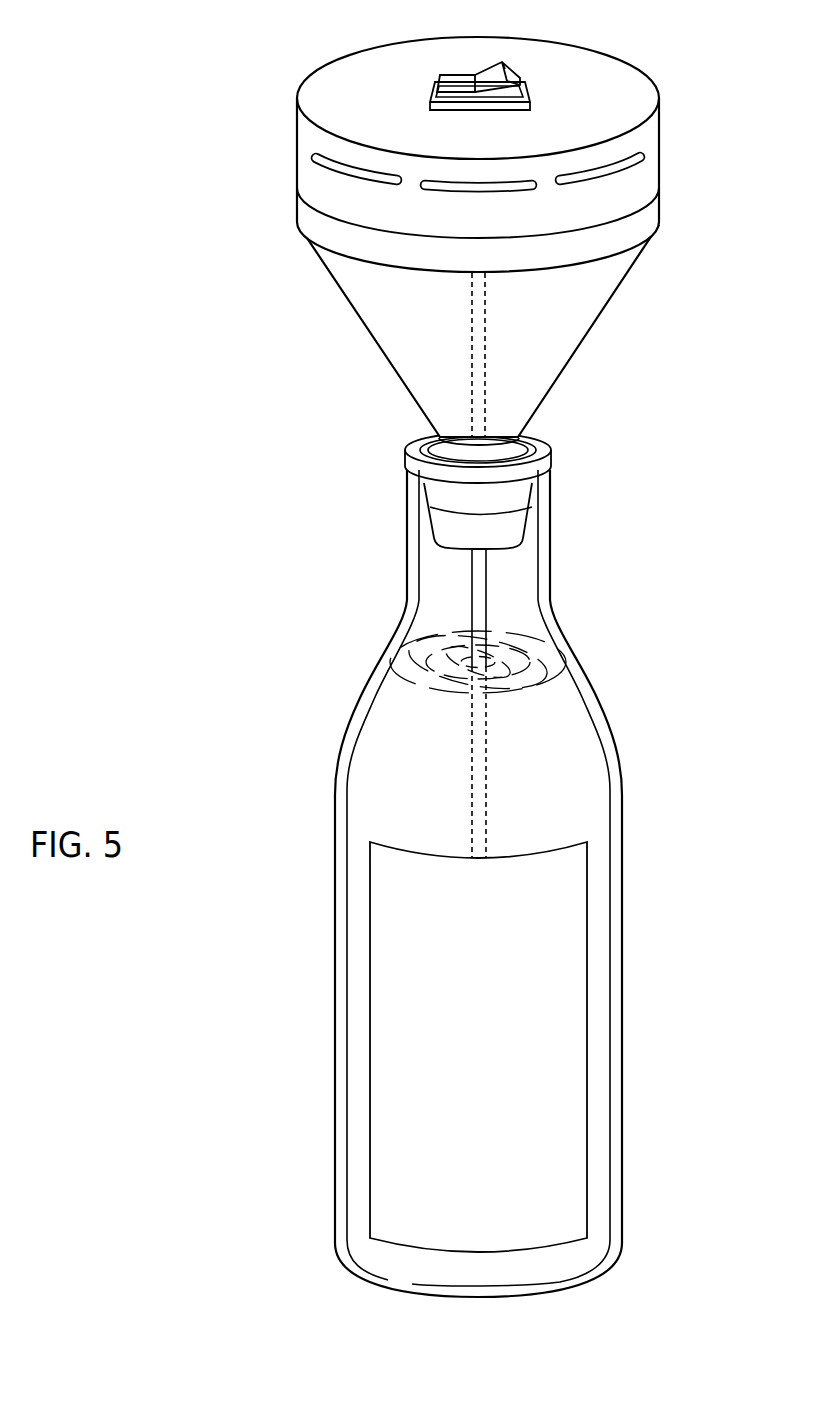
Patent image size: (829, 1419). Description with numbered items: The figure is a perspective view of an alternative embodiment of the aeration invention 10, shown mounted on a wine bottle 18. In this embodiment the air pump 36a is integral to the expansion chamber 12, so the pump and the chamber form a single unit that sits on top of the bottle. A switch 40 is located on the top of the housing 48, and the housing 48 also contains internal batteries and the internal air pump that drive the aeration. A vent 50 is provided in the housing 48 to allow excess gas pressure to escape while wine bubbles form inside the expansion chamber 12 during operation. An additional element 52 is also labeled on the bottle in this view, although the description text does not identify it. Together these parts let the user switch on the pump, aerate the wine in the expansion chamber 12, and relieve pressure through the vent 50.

The aeration invention 10 is at (182, 115).
The expansion chamber 12 is at (592, 322).
The wine bottle 18 is at (610, 718).
The air pump 36a is at (560, 72).
The switch 40 is at (460, 80).
The housing 48 is at (635, 87).
The vent 50 is at (630, 157).
The wine 52 is at (567, 802).